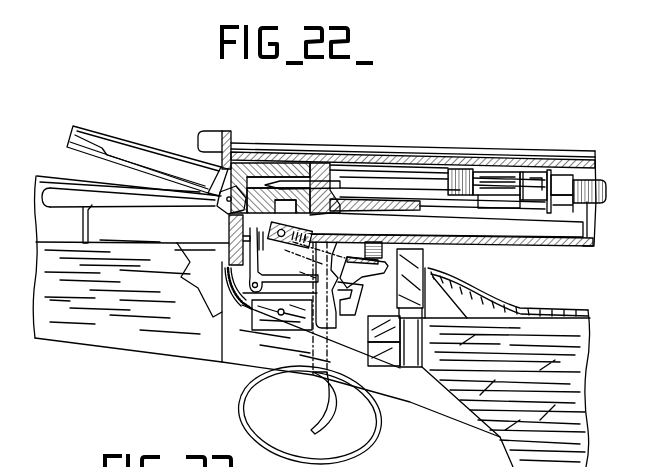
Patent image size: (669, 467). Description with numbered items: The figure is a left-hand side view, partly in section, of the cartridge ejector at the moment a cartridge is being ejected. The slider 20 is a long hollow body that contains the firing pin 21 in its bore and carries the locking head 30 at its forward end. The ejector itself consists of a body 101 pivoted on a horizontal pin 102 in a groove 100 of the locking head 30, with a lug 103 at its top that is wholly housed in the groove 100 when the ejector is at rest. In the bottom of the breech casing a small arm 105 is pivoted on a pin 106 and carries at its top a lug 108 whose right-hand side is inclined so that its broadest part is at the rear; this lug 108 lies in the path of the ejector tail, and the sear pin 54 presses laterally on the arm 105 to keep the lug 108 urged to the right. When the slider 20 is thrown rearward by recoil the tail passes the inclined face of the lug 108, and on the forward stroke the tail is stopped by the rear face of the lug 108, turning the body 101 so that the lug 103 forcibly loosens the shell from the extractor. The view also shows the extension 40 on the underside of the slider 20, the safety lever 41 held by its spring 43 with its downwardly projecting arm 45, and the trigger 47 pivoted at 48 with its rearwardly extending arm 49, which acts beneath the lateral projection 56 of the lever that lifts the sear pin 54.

The slider 20 is at (338, 163).
The firing pin 21 is at (310, 183).
The locking head 30 is at (266, 170).
The extension 40 is at (444, 225).
The safety lever 41 is at (440, 290).
The spring 43 is at (512, 306).
The arm 45 is at (354, 298).
The trigger 47 is at (335, 413).
The pivot 48 is at (323, 250).
The rearwardly extending arm 49 is at (364, 272).
The sear pin 54 is at (257, 253).
The lateral projection 56 is at (383, 242).
The groove 100 is at (228, 211).
The body 101 is at (245, 168).
The horizontal pin 102 is at (227, 204).
The lug 103 is at (219, 199).
The arm 105 is at (280, 230).
The pin 106 is at (227, 273).
The lug 108 is at (228, 225).